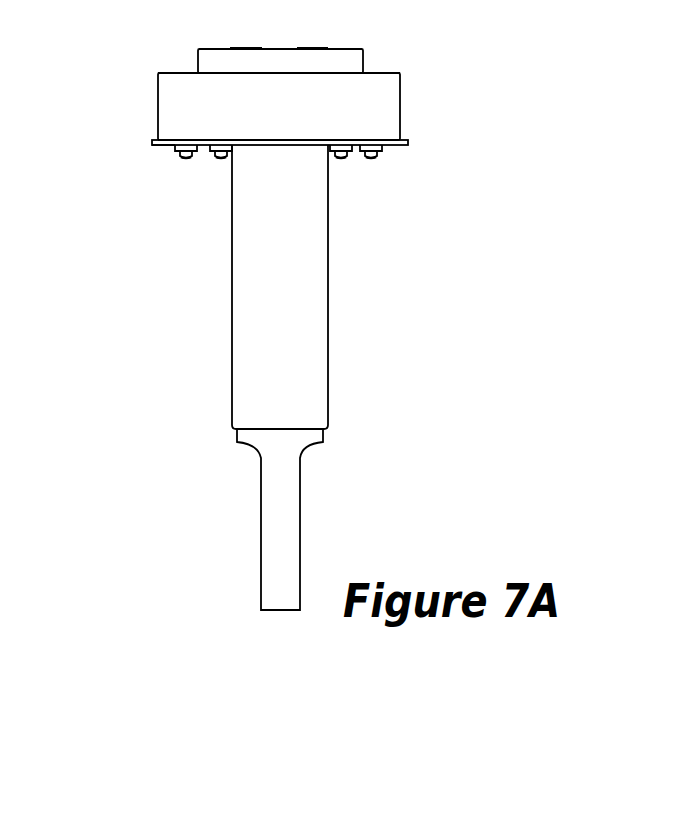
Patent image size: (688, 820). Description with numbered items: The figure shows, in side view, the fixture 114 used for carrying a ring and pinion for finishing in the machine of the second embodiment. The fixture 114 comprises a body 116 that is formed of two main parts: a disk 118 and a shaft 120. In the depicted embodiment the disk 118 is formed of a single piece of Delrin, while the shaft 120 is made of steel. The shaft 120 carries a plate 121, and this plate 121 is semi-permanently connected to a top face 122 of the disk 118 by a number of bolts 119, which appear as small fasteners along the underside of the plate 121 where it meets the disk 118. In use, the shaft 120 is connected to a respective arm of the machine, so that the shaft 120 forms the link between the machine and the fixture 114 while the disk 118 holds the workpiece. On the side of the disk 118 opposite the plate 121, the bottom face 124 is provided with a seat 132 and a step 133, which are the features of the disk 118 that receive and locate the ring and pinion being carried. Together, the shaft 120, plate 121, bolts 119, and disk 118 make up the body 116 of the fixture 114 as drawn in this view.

The fixture 114 is at (467, 302).
The body 116 is at (151, 145).
The disk 118 is at (400, 105).
The bolts 119 is at (188, 159).
The shaft 120 is at (328, 234).
The plate 121 is at (408, 145).
The top face 122 is at (255, 140).
The bottom face 124 is at (386, 73).
The seat 132 is at (170, 73).
The step 133 is at (215, 49).